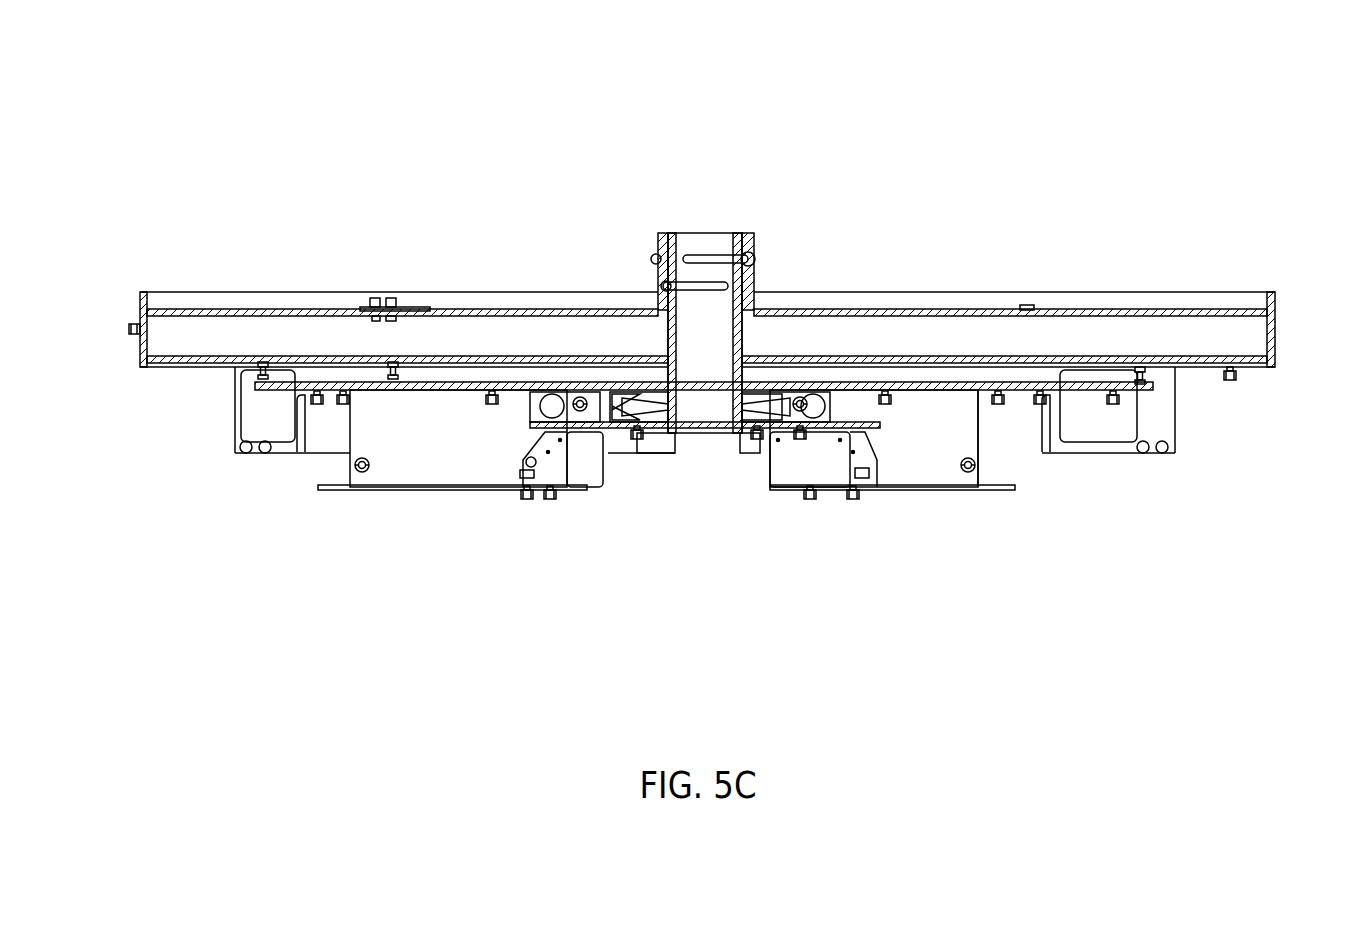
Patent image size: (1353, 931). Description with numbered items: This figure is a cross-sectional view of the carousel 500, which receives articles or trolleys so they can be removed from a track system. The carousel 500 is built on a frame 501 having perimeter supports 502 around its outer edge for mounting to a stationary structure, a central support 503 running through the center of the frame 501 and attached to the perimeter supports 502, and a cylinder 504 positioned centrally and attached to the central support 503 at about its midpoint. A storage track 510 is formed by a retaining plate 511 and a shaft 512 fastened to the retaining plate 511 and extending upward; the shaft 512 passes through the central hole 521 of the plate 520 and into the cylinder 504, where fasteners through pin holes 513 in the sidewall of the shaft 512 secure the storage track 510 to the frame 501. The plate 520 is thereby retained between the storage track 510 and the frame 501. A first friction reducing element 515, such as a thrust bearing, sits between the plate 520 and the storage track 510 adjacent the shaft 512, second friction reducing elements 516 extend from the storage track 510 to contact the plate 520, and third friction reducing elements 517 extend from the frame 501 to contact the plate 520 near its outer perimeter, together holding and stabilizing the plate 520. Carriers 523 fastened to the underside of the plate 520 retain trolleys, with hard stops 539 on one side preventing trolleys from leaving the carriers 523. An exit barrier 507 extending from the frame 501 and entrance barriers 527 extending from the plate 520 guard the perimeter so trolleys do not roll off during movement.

The carousel 500 is at (706, 116).
The frame 501 is at (143, 292).
The perimeter supports 502 is at (1062, 292).
The central support 503 is at (553, 310).
The cylinder 504 is at (662, 286).
The exit barrier 507 is at (246, 453).
The storage track 510 is at (670, 437).
The retaining plate 511 is at (883, 488).
The shaft 512 is at (672, 233).
The pin holes 513 is at (742, 236).
The first friction reducing element 515 is at (760, 415).
The second friction reducing elements 516 is at (825, 403).
The third friction reducing elements 517 is at (393, 375).
The plate 520 is at (980, 390).
The central hole 521 is at (745, 405).
The carriers 523 is at (480, 490).
The entrance barriers 527 is at (265, 453).
The hard stops 539 is at (785, 468).